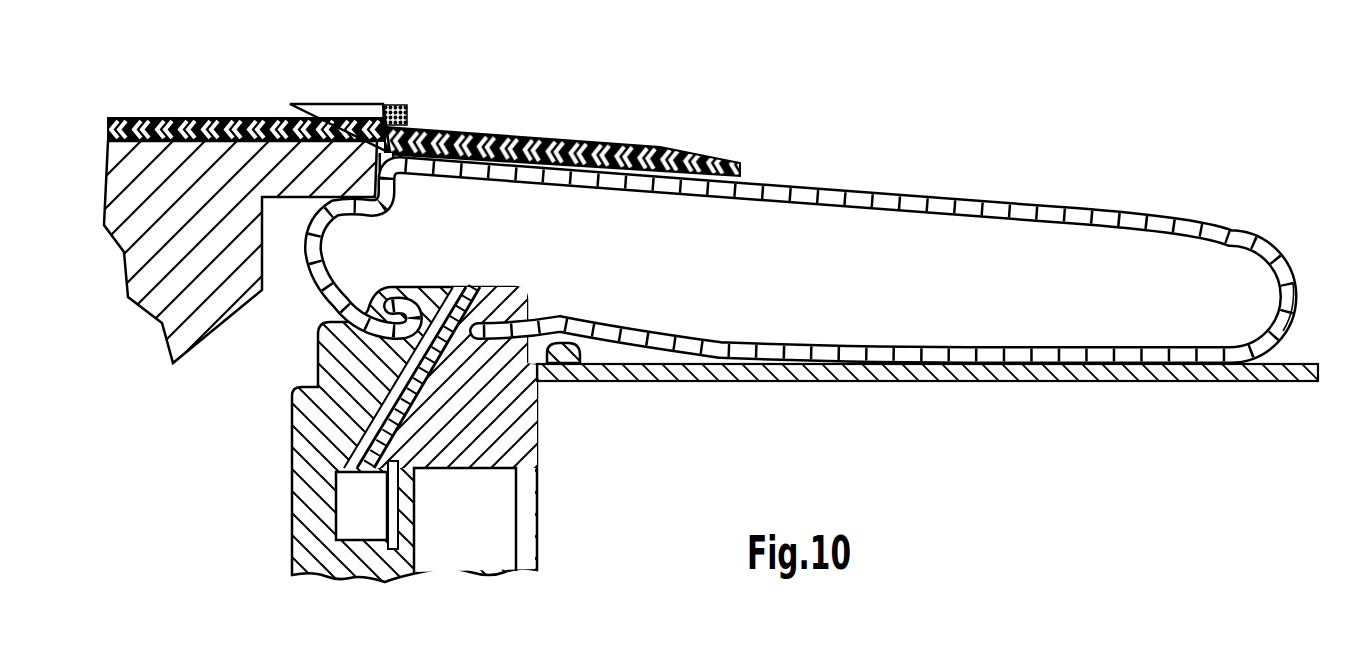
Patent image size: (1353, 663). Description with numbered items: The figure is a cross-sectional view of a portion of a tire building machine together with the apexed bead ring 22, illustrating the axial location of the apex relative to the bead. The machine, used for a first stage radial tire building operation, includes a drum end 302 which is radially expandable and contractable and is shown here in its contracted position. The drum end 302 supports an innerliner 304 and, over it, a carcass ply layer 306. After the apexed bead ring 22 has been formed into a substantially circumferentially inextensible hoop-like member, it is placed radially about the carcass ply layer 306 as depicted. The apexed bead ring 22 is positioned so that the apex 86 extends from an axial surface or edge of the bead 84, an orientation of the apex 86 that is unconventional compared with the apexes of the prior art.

The apexed bead ring 22 is at (366, 84).
The apex 86 is at (367, 127).
The bead 84 is at (407, 120).
The carcass ply layer 306 is at (563, 137).
The innerliner 304 is at (707, 160).
The drum end 302 is at (197, 282).